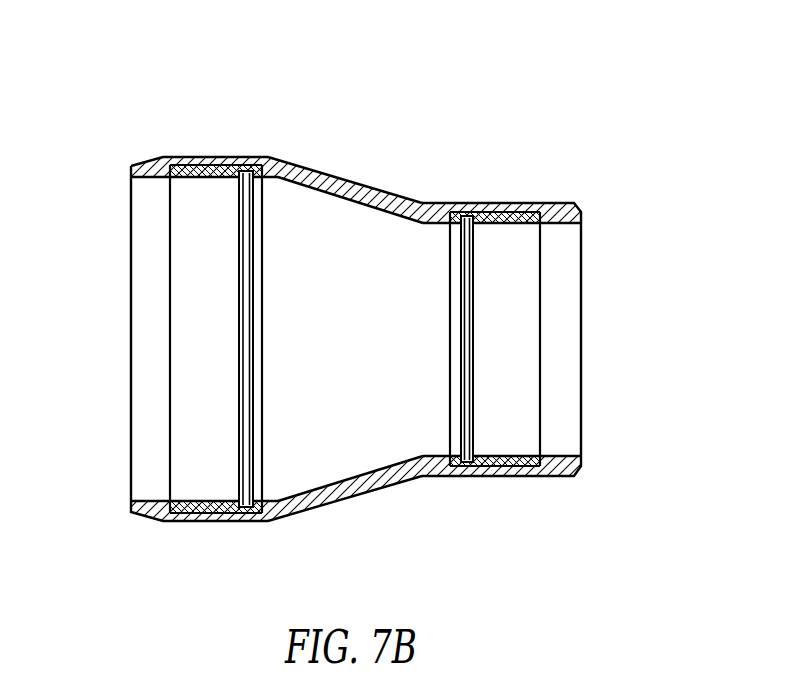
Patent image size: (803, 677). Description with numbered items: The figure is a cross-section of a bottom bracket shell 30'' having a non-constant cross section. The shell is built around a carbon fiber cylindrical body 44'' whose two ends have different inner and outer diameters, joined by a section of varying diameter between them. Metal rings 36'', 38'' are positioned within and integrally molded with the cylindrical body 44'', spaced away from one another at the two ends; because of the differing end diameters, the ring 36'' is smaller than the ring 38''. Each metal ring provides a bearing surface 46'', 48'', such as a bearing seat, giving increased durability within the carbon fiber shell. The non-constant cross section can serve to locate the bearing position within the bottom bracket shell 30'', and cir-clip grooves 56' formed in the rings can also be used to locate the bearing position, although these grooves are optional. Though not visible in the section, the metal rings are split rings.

The bottom bracket shell 30'' is at (356, 315).
The ring 36'' is at (356, 354).
The ring 38'' is at (356, 376).
The cylindrical body 44'' is at (356, 322).
The bearing surface 46'' is at (569, 339).
The bearing surface 48'' is at (143, 339).
The cir-clip grooves 56' is at (356, 365).